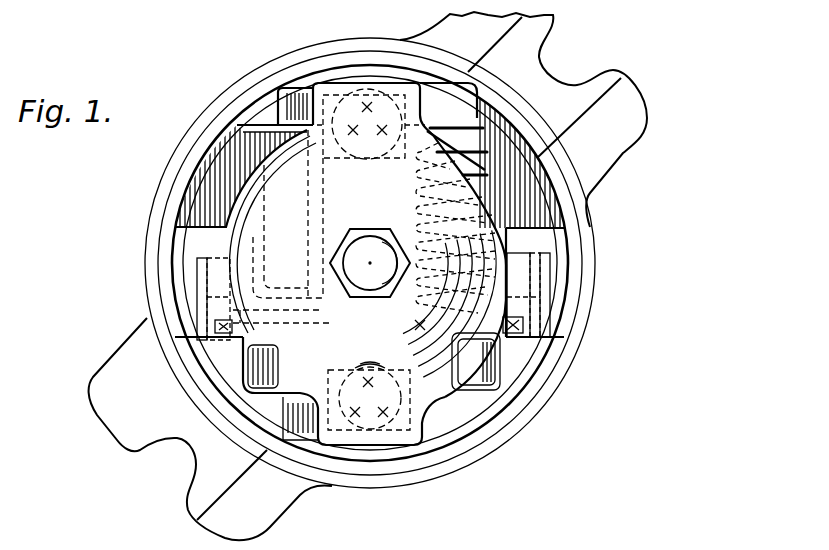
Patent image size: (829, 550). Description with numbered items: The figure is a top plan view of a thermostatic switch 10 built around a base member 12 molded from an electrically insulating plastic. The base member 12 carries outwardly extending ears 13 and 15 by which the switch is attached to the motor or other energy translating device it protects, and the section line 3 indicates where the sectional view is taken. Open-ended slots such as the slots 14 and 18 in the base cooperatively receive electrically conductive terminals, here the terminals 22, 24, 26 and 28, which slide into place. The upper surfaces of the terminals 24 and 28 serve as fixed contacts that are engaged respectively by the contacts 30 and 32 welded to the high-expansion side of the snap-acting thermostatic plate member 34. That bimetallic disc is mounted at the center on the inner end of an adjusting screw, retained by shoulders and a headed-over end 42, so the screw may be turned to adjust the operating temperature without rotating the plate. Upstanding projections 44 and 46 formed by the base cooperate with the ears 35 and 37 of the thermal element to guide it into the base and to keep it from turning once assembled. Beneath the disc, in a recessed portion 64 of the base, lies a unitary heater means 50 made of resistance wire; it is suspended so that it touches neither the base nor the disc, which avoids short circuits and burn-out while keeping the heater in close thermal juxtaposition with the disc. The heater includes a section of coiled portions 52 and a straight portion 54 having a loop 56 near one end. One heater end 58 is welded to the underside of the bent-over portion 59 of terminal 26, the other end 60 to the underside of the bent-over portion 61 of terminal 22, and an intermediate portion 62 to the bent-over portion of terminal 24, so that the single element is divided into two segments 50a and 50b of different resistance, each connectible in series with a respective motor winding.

The section line 3- 3 is at (190, 263).
The thermostatic switch 10 is at (660, 180).
The base member 12 is at (578, 368).
The ear 13 is at (630, 106).
The open-ended slot 14 is at (200, 280).
The ear 15 is at (107, 423).
The open-ended slot 18 is at (533, 297).
The terminal 22 is at (200, 312).
The terminal 24 is at (333, 97).
The terminal 26 is at (545, 312).
The terminal 28 is at (333, 443).
The contact 30 is at (372, 157).
The contact 32 is at (368, 364).
The thermostatic plate member 34 is at (446, 355).
The ear 35 is at (422, 427).
The ear 37 is at (362, 88).
The headed-over end 42 is at (374, 234).
The upstanding projection 44 is at (295, 437).
The upstanding projection 46 is at (289, 95).
The heater means 50 is at (268, 233).
The heater portion 50a is at (318, 222).
The heater portion 50b is at (412, 193).
The coiled portions 52 is at (420, 323).
The straight portion 54 is at (310, 257).
The loop 56 is at (320, 313).
The heater end 58 is at (495, 330).
The bent-over portion 59 is at (520, 262).
The heater end 60 is at (287, 337).
The bent-over portion 61 is at (218, 265).
The intermediate heater portion 62 is at (454, 128).
The recessed portion 64 is at (257, 147).